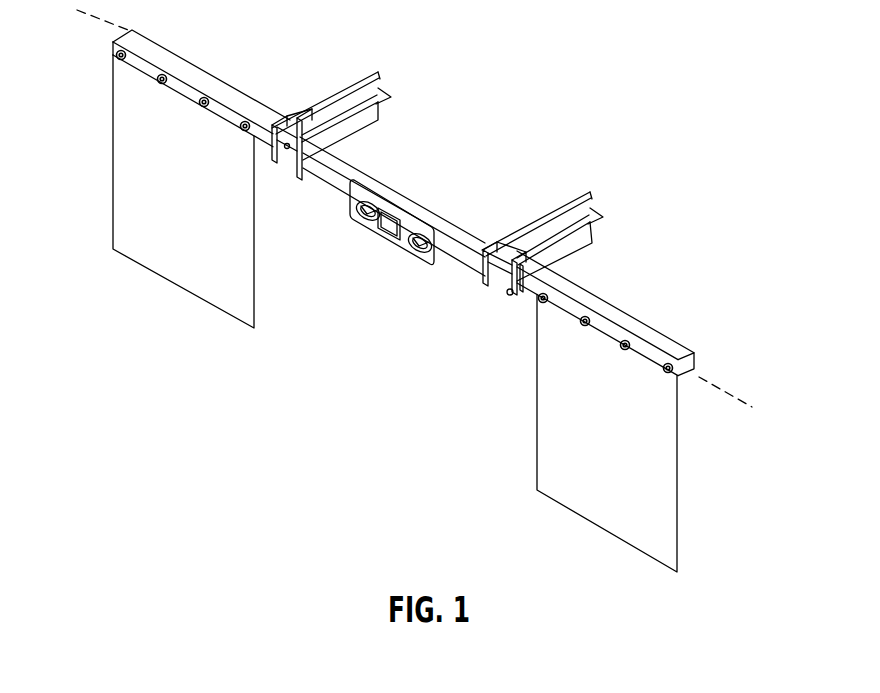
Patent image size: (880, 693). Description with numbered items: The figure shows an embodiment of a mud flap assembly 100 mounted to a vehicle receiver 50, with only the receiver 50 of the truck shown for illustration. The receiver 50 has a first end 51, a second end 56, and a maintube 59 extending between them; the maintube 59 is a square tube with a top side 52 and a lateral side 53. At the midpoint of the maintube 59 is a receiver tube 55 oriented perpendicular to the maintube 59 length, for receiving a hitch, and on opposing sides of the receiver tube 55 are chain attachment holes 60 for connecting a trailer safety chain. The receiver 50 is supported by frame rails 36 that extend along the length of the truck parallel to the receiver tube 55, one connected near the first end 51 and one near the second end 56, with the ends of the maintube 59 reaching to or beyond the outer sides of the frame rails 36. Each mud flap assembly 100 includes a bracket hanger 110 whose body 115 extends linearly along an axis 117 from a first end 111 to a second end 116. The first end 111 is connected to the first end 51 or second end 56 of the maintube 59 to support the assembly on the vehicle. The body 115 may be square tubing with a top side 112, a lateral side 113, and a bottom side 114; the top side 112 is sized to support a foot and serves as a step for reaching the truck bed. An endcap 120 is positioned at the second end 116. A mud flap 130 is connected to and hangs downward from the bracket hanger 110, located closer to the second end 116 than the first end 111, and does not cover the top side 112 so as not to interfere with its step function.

The mud flap assembly 100 is at (674, 101).
The bracket hanger 110 is at (193, 67).
The body 115 is at (648, 378).
The top side 112 is at (635, 323).
The second end 116 is at (684, 354).
The endcap 120 is at (694, 370).
The bottom side 114 is at (681, 376).
The axis 117 is at (750, 407).
The mud flap 130 is at (162, 255).
The receiver 50 is at (392, 203).
The maintube 59 is at (417, 204).
The chain attachment holes 60 is at (357, 251).
The receiver tube 55 is at (384, 236).
The first end 51 is at (280, 119).
The top side 52 is at (300, 115).
The lateral side 53 is at (321, 171).
The second end 56 is at (537, 262).
The frame rail 36 is at (365, 85).
The first end 111 is at (522, 287).
The lateral side 113 is at (536, 268).